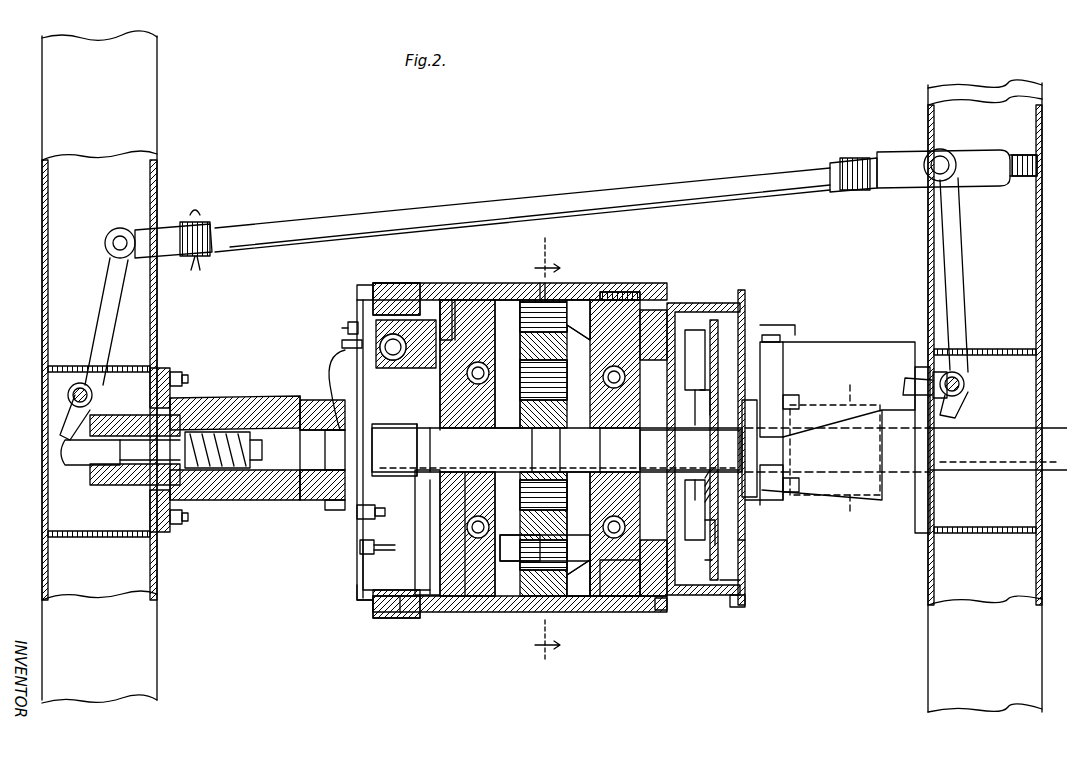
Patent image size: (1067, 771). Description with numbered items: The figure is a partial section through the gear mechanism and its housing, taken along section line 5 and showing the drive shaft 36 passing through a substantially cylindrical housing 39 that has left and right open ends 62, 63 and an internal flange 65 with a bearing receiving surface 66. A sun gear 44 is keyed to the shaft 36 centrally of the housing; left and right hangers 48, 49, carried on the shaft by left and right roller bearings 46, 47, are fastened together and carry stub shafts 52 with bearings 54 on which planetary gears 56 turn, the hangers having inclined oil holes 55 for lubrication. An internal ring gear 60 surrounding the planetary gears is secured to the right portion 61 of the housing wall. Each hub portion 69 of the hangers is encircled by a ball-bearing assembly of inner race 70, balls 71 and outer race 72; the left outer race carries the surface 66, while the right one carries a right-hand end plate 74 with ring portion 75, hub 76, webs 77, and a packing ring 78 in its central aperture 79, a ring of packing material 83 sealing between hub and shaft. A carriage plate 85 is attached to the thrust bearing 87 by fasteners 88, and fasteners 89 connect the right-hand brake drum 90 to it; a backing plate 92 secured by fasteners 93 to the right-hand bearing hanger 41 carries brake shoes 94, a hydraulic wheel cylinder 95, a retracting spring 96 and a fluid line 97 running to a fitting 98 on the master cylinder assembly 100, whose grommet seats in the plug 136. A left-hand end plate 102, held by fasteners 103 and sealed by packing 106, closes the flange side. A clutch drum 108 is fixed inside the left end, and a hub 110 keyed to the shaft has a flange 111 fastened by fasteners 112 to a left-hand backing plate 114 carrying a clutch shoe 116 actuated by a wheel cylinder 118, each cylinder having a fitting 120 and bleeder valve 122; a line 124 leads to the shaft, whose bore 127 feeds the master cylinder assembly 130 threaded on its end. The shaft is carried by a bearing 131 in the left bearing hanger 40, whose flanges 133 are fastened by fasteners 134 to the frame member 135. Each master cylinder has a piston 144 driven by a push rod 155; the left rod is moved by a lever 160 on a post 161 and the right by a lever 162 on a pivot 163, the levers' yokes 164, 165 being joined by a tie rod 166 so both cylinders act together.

The section line 5- 5 is at (547, 458).
The drive shaft 36 is at (990, 416).
The housing 39 is at (393, 618).
The left bearing hanger 40 is at (290, 402).
The right-hand bearing hanger 41 is at (868, 503).
The sun gear 44 is at (552, 415).
The left roller bearing 46 is at (557, 450).
The right roller bearing 47 is at (577, 450).
The left hanger 48 is at (490, 600).
The right hanger 49 is at (615, 600).
The stub shaft 52 is at (520, 548).
The bearing 54 is at (545, 548).
The inclined oil hole 55 is at (481, 449).
The planetary gear 56 is at (575, 600).
The internal ring gear 60 is at (552, 295).
The right portion of the interior wall 61 is at (508, 300).
The left open end 62 is at (368, 604).
The right open end 63 is at (600, 292).
The internal flange 65 is at (482, 300).
The bearing receiving surface 66 is at (462, 600).
The hub portion 69 is at (425, 392).
The inner race 70 is at (470, 512).
The ball 71 is at (470, 374).
The outer race 72 is at (421, 535).
The right-hand end plate 74 is at (703, 449).
The ring portion 75 is at (668, 608).
The hub 76 is at (645, 340).
The web 77 is at (612, 310).
The packing ring 78 is at (697, 392).
The central aperture 79 is at (696, 377).
The ring of packing material 83 is at (690, 450).
The carriage plate 85 is at (701, 557).
The thrust bearing 87 is at (757, 452).
The fastener 88 is at (697, 505).
The fastener 89 is at (702, 534).
The right-hand brake drum 90 is at (718, 600).
The backing plate 92 is at (748, 602).
The fastener 93 is at (800, 402).
The brake shoe 94 is at (745, 575).
The hydraulic wheel cylinder 95 is at (748, 510).
The retracting spring 96 is at (748, 540).
The fluid line 97 is at (780, 320).
The fitting 98 is at (782, 338).
The master cylinder assembly 100 is at (905, 334).
The left-hand end plate 102 is at (450, 300).
The fastener 103 is at (405, 620).
The packing 106 is at (410, 450).
The clutch drum 108 is at (368, 288).
The hub 110 is at (433, 450).
The flange 111 is at (358, 512).
The fastener 112 is at (365, 552).
The left-hand backing plate 114 is at (356, 590).
The clutch shoe 116 is at (392, 285).
The wheel cylinder 118 is at (407, 330).
The fitting 120 is at (345, 340).
The bleeder valve 122 is at (350, 322).
The line 124 is at (335, 350).
The bore 127 is at (330, 500).
The master cylinder assembly 130 is at (110, 488).
The bearing 131 is at (312, 402).
The flange 133 is at (168, 370).
The fastener 134 is at (185, 372).
The frame member 135 is at (157, 598).
The plug 136 is at (780, 372).
The piston 144 is at (160, 470).
The push rod 155 is at (950, 377).
The lever 160 is at (100, 285).
The post 161 is at (68, 396).
The lever 162 is at (960, 272).
The pivot 163 is at (965, 305).
The yoke 164 is at (175, 228).
The yoke 165 is at (900, 152).
The tie rod 166 is at (465, 205).